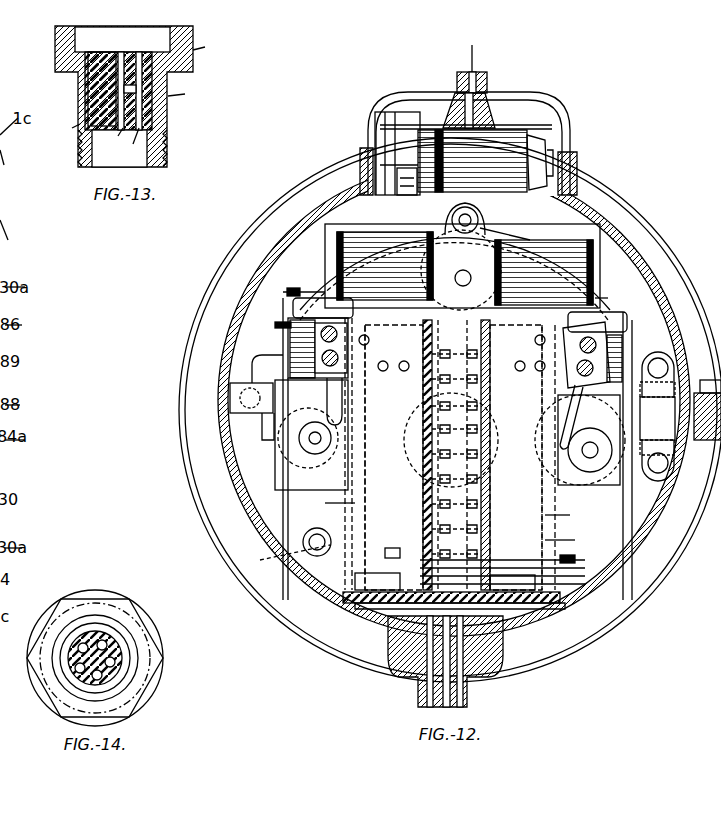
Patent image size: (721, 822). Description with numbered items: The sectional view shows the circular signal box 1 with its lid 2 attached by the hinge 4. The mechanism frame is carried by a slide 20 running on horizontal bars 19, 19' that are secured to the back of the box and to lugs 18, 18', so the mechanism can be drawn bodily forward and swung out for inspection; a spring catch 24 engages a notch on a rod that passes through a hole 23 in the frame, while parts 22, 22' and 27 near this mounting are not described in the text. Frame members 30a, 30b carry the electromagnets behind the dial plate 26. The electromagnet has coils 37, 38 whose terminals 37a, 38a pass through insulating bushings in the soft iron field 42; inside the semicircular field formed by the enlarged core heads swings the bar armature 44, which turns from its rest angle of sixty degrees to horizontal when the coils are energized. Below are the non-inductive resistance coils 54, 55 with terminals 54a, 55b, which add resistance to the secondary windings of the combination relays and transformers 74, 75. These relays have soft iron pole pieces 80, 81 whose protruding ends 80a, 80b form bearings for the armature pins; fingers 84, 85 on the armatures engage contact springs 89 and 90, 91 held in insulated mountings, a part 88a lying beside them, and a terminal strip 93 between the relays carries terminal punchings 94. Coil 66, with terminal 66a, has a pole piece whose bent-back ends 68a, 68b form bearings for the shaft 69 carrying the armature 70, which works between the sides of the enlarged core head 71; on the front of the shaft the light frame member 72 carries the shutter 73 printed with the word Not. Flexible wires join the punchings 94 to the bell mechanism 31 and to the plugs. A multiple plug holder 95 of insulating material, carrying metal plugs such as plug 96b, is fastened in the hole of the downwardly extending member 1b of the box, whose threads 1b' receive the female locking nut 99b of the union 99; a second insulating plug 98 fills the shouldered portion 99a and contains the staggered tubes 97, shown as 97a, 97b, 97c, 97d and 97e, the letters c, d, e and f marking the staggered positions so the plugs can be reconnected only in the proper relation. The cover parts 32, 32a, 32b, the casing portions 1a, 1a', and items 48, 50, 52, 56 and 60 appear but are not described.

In FIG. 12, the box 1 is at (566, 222).
In FIG. 12, the lid 2 is at (451, 410).
In FIG. 12, the hinge 4 is at (705, 378).
In FIG. 12, the inner shell 1a is at (455, 209).
In FIG. 12, the boss block 1a' is at (460, 108).
In FIG. 12, the downwardly extending member 1b is at (454, 397).
In FIG. 12, the threads 1b' is at (522, 644).
In FIG. 12, the lug 18 is at (677, 366).
In FIG. 12, the lug 18' is at (679, 460).
In FIG. 12, the horizontal bar 19 is at (681, 364).
In FIG. 12, the horizontal bar 19' is at (683, 471).
In FIG. 12, the slide 20 is at (657, 418).
In FIG. 12, the bracket tab 22 is at (657, 387).
In FIG. 12, the bracket tab 22' is at (657, 445).
In FIG. 12, the hole 23 is at (270, 380).
In FIG. 12, the spring catch 24 is at (268, 436).
In FIG. 12, the dial plate 26 is at (437, 199).
In FIG. 12, the screw 27 is at (636, 387).
In FIG. 12, the frame member 30a is at (642, 337).
In FIG. 12, the frame member 30b is at (285, 287).
In FIG. 12, the bell mechanism 31 is at (465, 153).
In FIG. 12, the dome cover 32 is at (553, 104).
In FIG. 12, the dome boss 32a is at (457, 80).
In FIG. 12, the dome lug 32b is at (318, 290).
In FIG. 12, the coil 37 is at (462, 266).
In FIG. 12, the terminal 37a is at (445, 241).
In FIG. 12, the coil 38 is at (544, 272).
In FIG. 12, the terminal 38a is at (604, 298).
In FIG. 12, the soft iron field 42 is at (566, 212).
In FIG. 12, the bar armature 44 is at (461, 270).
In FIG. 12, the pivot bearing 48 is at (452, 222).
In FIG. 12, the lever 50 is at (505, 220).
In FIG. 12, the pinion 52 is at (458, 270).
In FIG. 12, the non-inductive resistance coil 54 is at (571, 347).
In FIG. 12, the terminal 54a is at (630, 320).
In FIG. 12, the non-inductive resistance coil 55 is at (348, 338).
In FIG. 12, the terminal 55b is at (273, 315).
In FIG. 12, the spring 56 is at (280, 466).
In FIG. 12, the cam 60 is at (600, 484).
In FIG. 12, the coil 66 is at (502, 575).
In FIG. 12, the terminal 66a is at (587, 559).
In FIG. 12, the protruding end 68a is at (458, 455).
In FIG. 12, the protruding end 68b is at (300, 548).
In FIG. 12, the shaft 69 is at (308, 538).
In FIG. 12, the armature 70 is at (305, 562).
In FIG. 12, the enlarged core head 71 is at (320, 590).
In FIG. 12, the frame member 72 is at (425, 603).
In FIG. 12, the shutter 73 is at (480, 604).
In FIG. 12, the combination primary relay and transformer 74 is at (394, 457).
In FIG. 12, the combination primary relay and transformer 75 is at (516, 457).
In FIG. 12, the pole piece 80 is at (321, 501).
In FIG. 12, the protruding end 80a is at (375, 570).
In FIG. 12, the protruding end 80b is at (401, 548).
In FIG. 12, the pole piece 81 is at (570, 514).
In FIG. 12, the finger 84 is at (328, 513).
In FIG. 12, the finger 85 is at (573, 540).
In FIG. 12, the gear 88a is at (305, 432).
In FIG. 12, the contact spring 89 is at (311, 434).
In FIG. 12, the contact spring 90 is at (580, 440).
In FIG. 12, the contact spring 91 is at (589, 435).
In FIG. 12, the terminal strip 93 is at (480, 332).
In FIG. 12, the terminal punchings 94 is at (448, 332).
In FIG. 12, the multiple plug holder 95 is at (420, 668).
In FIG. 12, the metal plug 96b is at (467, 684).
In FIG. 13, the tubes 97 is at (122, 60).
In FIG. 13, the tube 97a is at (126, 145).
In FIG. 14, the tube 97a is at (120, 660).
In FIG. 14, the tube 97b is at (95, 628).
In FIG. 13, the tube 97c is at (112, 138).
In FIG. 14, the tube 97c is at (115, 640).
In FIG. 14, the tube 97d is at (110, 680).
In FIG. 13, the tube 97e is at (60, 128).
In FIG. 14, the tube 97e is at (78, 640).
In FIG. 13, the insulating plug 98 is at (97, 60).
In FIG. 13, the union 99 is at (127, 96).
In FIG. 13, the shouldered portion 99a is at (192, 92).
In FIG. 13, the female locking nut 99b is at (215, 46).
In FIG. 12, the axis c is at (488, 718).
In FIG. 12, the lead d is at (420, 692).
In FIG. 14, the lead e is at (165, 659).
In FIG. 12, the lead e is at (468, 700).
In FIG. 12, the lead f is at (428, 706).